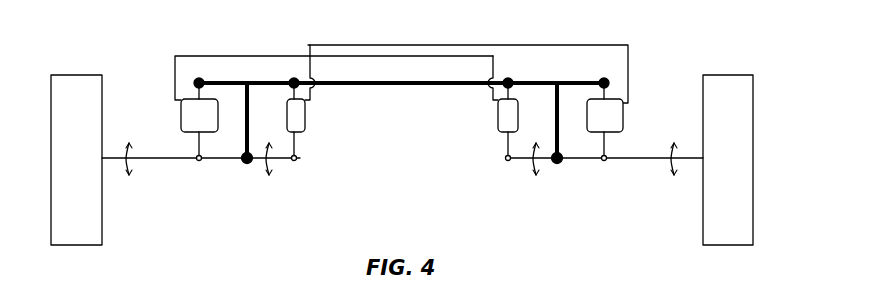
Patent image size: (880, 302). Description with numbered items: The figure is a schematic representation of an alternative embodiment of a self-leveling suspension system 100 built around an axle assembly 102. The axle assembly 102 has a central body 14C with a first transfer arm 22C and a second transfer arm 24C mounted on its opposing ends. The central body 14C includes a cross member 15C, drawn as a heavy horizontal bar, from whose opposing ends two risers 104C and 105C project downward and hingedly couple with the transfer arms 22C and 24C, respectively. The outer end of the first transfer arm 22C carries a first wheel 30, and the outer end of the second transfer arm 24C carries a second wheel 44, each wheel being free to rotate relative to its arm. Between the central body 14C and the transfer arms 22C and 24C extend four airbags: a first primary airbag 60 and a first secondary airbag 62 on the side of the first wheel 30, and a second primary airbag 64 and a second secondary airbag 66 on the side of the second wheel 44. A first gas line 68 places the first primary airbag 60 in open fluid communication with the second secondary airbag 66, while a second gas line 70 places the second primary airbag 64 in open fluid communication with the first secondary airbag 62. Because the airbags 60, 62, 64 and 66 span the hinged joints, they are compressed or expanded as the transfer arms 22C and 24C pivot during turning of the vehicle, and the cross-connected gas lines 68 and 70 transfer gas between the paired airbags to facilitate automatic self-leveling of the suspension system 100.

The first wheel 30 is at (80, 245).
The second wheel 44 is at (731, 245).
The first primary airbag 60 is at (181, 115).
The first secondary airbag 62 is at (305, 122).
The second primary airbag 64 is at (623, 116).
The second secondary airbag 66 is at (498, 124).
The first gas line 68 is at (220, 56).
The second gas line 70 is at (462, 45).
The suspension system 100 is at (617, 25).
The axle assembly 102 is at (417, 86).
The riser 104C is at (250, 103).
The riser 105C is at (563, 140).
The central body 14C is at (352, 86).
The cross member 15C is at (497, 80).
The first transfer arm 22C is at (147, 158).
The second transfer arm 24C is at (623, 160).